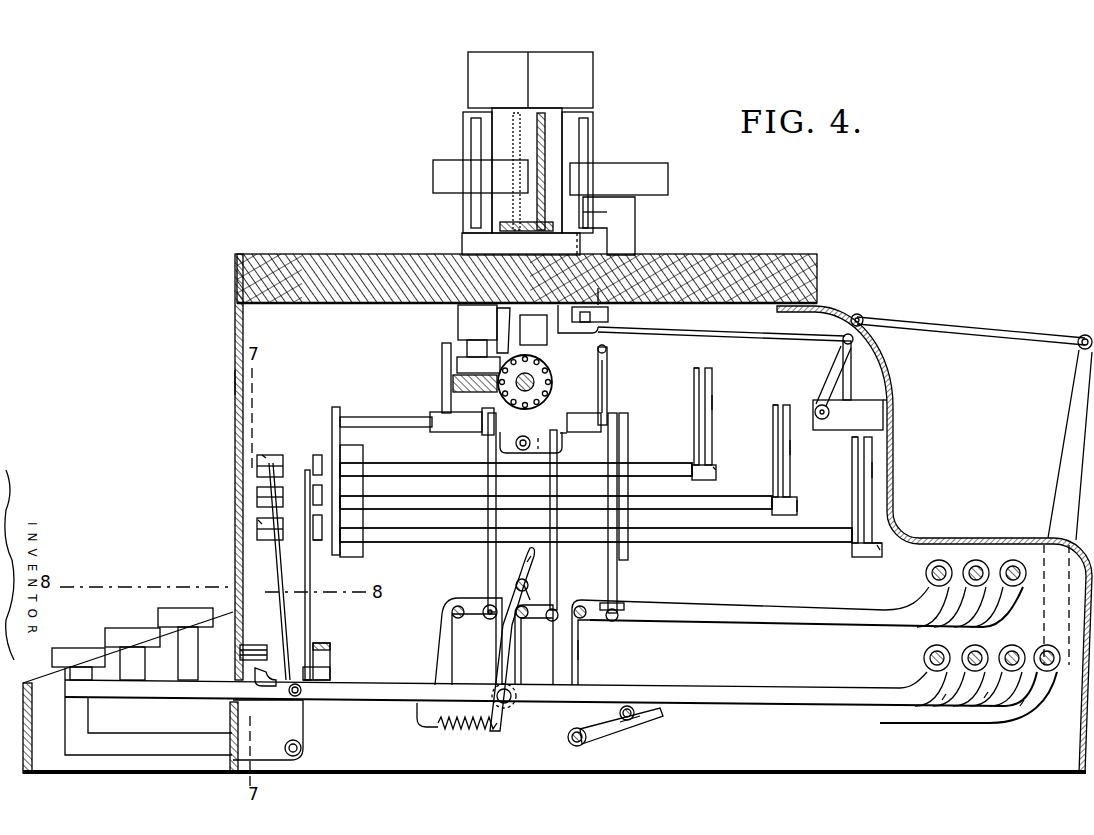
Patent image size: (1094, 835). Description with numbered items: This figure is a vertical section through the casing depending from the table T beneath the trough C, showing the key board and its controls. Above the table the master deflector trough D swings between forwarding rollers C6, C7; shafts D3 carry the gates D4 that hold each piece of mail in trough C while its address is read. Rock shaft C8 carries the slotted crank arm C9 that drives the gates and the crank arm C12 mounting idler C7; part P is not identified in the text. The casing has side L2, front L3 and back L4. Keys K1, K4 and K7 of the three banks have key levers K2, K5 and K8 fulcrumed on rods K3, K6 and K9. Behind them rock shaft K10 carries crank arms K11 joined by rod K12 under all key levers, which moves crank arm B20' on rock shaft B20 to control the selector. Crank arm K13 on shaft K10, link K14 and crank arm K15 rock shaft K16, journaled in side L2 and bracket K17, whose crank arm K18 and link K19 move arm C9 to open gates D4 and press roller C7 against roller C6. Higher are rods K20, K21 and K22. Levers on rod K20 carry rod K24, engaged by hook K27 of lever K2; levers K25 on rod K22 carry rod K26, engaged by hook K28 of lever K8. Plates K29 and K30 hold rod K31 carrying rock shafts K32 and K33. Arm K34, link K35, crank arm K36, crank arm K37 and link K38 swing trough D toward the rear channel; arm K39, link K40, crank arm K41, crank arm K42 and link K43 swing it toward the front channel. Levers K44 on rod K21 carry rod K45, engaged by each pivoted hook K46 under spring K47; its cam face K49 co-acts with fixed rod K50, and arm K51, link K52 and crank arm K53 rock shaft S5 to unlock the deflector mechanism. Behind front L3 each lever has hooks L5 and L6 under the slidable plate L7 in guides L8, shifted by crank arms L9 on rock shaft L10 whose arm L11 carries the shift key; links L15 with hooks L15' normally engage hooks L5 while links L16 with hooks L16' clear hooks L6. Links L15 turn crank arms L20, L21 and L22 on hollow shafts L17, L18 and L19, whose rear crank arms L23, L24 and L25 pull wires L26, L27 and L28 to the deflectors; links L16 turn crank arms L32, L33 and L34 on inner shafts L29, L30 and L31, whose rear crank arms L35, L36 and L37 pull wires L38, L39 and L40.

The casing T is at (383, 253).
The cap block D4 is at (480, 62).
The guide column D3 is at (472, 127).
The plunger body D is at (593, 153).
The central rod C is at (542, 160).
The left arm C6 is at (433, 165).
The right arm C7 is at (668, 178).
The base plate P is at (535, 230).
The stepped block C12 is at (637, 222).
The rod C8 is at (598, 290).
The bracket C9 is at (610, 320).
The rod K19 is at (750, 338).
The pivot K15 is at (860, 315).
The link K14 is at (990, 330).
The pivot K13 is at (1081, 334).
The link K18 is at (827, 367).
The block K17 is at (870, 400).
The pivot K16 is at (823, 419).
The casing wall L4 is at (897, 408).
The casing top L2 is at (275, 342).
The casing side wall L3 is at (237, 382).
The post K38 is at (440, 352).
The block K37 is at (440, 378).
The block K32 is at (470, 432).
The bracket K36 is at (485, 413).
The link K53 is at (542, 433).
The pivot S5 is at (518, 447).
The link K33 is at (572, 433).
The block K41 is at (613, 413).
The post K43 is at (608, 353).
The post K42 is at (605, 397).
The rod K30 is at (630, 433).
The rod K40 is at (613, 577).
The bracket K39 is at (617, 605).
The rod K52 is at (555, 487).
The pivot K49 is at (527, 562).
The rod K35 is at (487, 560).
The pivot K34 is at (487, 607).
The bar K29 is at (333, 405).
The rod K31 is at (383, 418).
The block L21 is at (340, 485).
The rod L17 is at (440, 467).
The rod L18 is at (405, 500).
The rod L19 is at (375, 527).
The post L23 is at (692, 433).
The post top L26 is at (702, 370).
The post L38 is at (713, 382).
The post L35 is at (714, 403).
The clip L29 is at (262, 455).
The post L24 is at (772, 430).
The post top L27 is at (780, 403).
The post L39 is at (792, 412).
The post L36 is at (792, 448).
The foot L30 is at (797, 507).
The post L25 is at (850, 498).
The post top L28 is at (860, 433).
The post L40 is at (870, 447).
The post L37 is at (870, 470).
The foot L31 is at (877, 540).
The clip L20 is at (315, 453).
The clip L22 is at (318, 542).
The clip L32 is at (258, 462).
The clip L33 is at (258, 492).
The clip L34 is at (262, 530).
The rod L16 is at (268, 571).
The pivot L16' is at (277, 708).
The rod L15 is at (324, 575).
The rod end L15' is at (340, 702).
The bracket L7 is at (330, 643).
The block L8 is at (250, 640).
The bracket L5 is at (330, 673).
The hook L6 is at (265, 673).
The block L9 is at (307, 715).
The pivot L10 is at (305, 753).
The frame L11 is at (145, 738).
The plate K8 is at (718, 692).
The key K7 is at (68, 648).
The key K4 is at (135, 628).
The key K1 is at (196, 608).
The lever K27 is at (438, 647).
The bracket K24 is at (460, 620).
The lever K46 is at (515, 643).
The hook K45 is at (530, 600).
The pivot K50 is at (530, 582).
The bracket K44 is at (545, 625).
The pivot K51 is at (527, 623).
The plate K25 is at (752, 612).
The bracket K26 is at (588, 622).
The bracket wall K28 is at (580, 650).
The spring K47 is at (465, 730).
The link B20 is at (590, 729).
The link end B20' is at (635, 743).
The pivot K12 is at (633, 707).
The roller K22 is at (943, 560).
The roller K21 is at (979, 560).
The roller K20 is at (1016, 560).
The roller K9 is at (924, 658).
The roller K6 is at (978, 653).
The roller K3 is at (1018, 647).
The roller K10 is at (1052, 673).
The tube K5 is at (945, 698).
The tube K2 is at (987, 695).
The tube K11 is at (1023, 703).